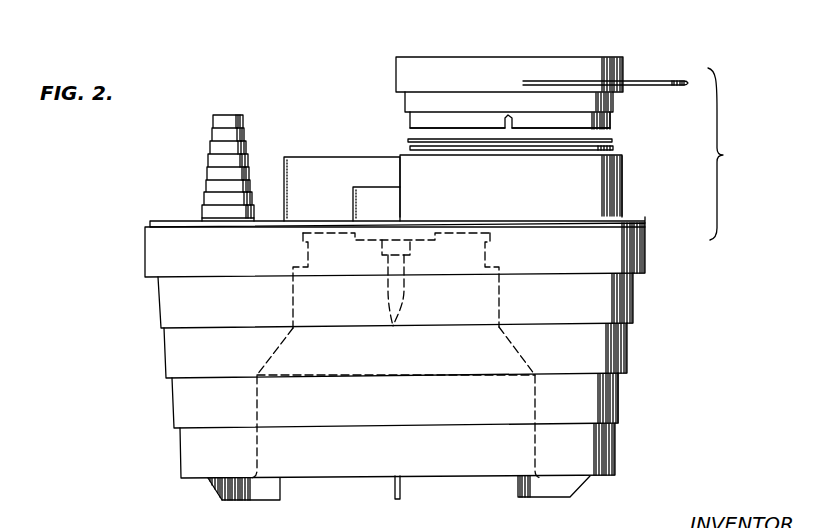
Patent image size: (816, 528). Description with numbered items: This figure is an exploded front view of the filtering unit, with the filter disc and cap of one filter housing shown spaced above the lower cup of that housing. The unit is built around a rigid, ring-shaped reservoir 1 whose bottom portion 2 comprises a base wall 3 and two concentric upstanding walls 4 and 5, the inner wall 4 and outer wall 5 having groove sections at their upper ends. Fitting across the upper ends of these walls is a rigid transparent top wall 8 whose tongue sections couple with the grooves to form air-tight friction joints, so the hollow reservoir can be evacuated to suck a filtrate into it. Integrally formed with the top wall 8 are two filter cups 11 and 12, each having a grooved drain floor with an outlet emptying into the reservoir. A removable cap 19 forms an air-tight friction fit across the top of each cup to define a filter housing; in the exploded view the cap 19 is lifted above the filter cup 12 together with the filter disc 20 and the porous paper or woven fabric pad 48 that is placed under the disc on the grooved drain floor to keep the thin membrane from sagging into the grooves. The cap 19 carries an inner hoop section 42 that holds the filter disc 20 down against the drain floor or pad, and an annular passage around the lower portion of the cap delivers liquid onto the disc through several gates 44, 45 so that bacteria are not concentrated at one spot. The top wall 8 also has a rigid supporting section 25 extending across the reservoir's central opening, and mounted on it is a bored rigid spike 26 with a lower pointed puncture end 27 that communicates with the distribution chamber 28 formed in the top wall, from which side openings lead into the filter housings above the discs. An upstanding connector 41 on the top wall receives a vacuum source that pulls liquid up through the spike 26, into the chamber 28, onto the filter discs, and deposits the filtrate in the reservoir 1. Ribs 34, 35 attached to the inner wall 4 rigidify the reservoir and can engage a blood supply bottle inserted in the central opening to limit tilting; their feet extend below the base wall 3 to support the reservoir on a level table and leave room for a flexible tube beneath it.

The rigid reservoir 1 is at (146, 363).
The bottom portion 2 is at (616, 383).
The base wall 3 is at (597, 476).
The inner upstanding wall 4 is at (258, 453).
The outer upstanding wall 5 is at (172, 410).
The top wall 8 is at (165, 220).
The filter cup 11 is at (301, 160).
The filter cup 12 is at (621, 175).
The removable cap 19 is at (617, 56).
The filter disc 20 is at (612, 138).
The supporting section 25 is at (441, 236).
The spike 26 is at (403, 292).
The puncture end 27 is at (393, 327).
The distribution chamber 28 is at (367, 197).
The rib 34 is at (272, 492).
The rib 35 is at (522, 483).
The upstanding connector 41 is at (212, 136).
The inner hoop section 42 is at (420, 125).
The gate 44 is at (518, 114).
The gate 45 is at (510, 120).
The porous pad 48 is at (617, 147).